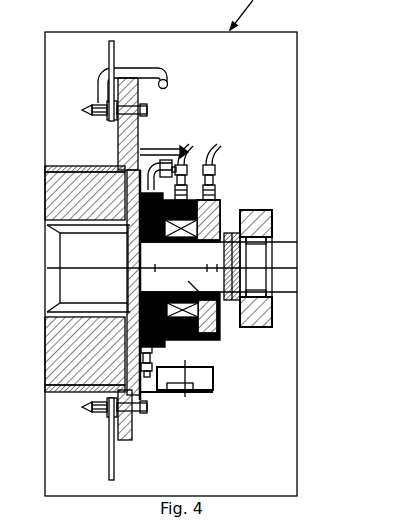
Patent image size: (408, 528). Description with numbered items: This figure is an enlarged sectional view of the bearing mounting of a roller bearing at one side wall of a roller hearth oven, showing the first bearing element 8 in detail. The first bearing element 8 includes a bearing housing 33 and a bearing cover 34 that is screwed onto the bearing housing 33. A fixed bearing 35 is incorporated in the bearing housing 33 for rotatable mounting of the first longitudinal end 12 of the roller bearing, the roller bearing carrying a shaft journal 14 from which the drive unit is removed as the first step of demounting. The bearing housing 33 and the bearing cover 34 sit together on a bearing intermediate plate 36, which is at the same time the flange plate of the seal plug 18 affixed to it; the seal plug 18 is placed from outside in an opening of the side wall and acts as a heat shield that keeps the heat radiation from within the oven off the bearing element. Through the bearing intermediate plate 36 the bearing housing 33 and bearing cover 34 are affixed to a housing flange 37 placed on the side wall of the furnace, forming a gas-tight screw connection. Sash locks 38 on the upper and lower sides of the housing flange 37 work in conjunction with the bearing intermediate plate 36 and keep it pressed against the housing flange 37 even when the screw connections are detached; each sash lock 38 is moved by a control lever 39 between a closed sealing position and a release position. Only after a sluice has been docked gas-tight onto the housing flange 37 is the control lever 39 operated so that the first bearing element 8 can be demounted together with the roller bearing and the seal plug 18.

The first bearing element 8 is at (249, 77).
The first longitudinal end 12 is at (210, 320).
The shaft journal 14 is at (272, 278).
The seal plug 18 is at (90, 200).
The bearing housing 33 is at (196, 200).
The bearing cover 34 is at (218, 320).
The fixed bearing 35 is at (218, 220).
The bearing intermediate plate 36 is at (142, 398).
The housing flange 37 is at (135, 86).
The sash lock 38 is at (140, 112).
The control lever 39 is at (108, 53).